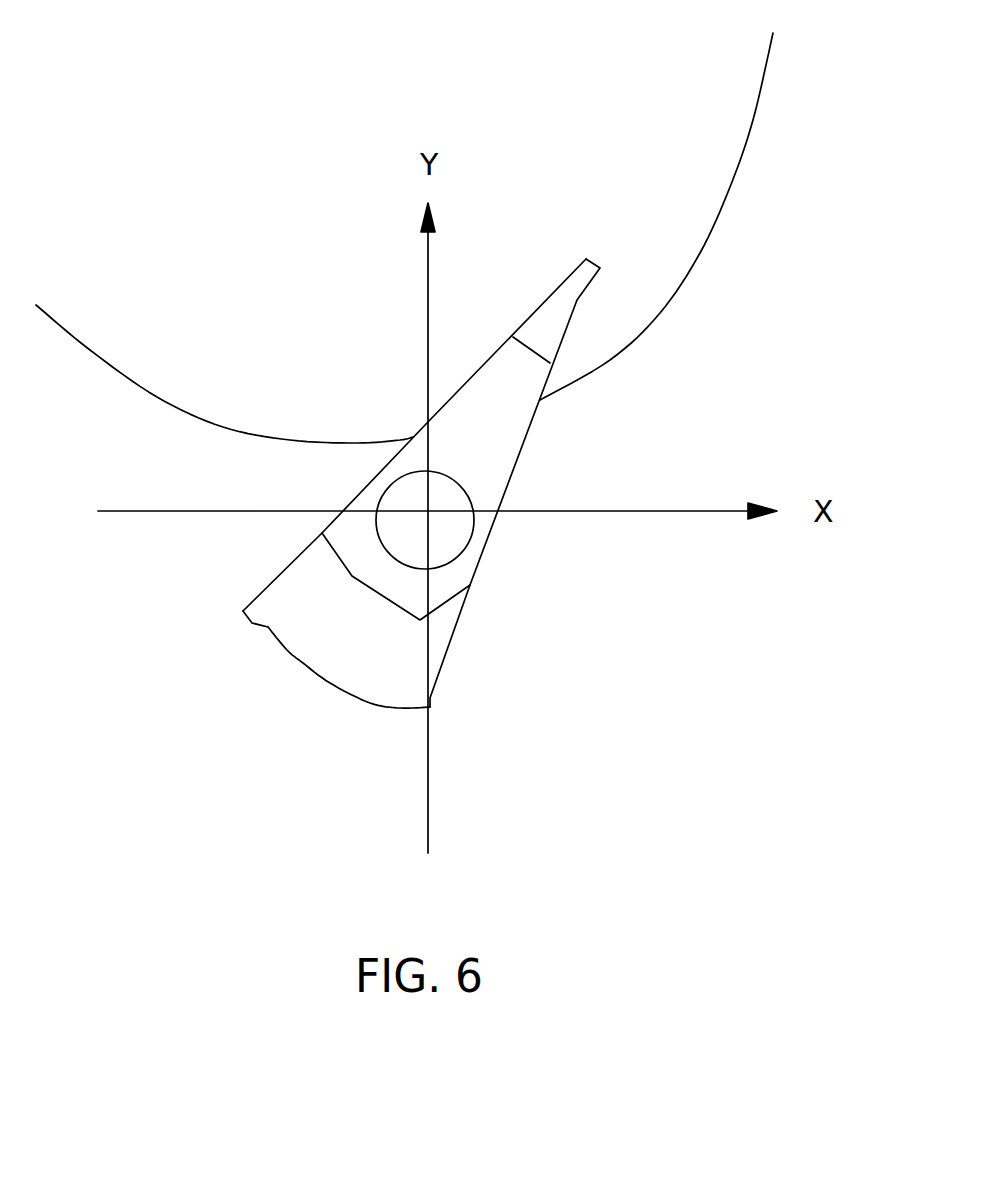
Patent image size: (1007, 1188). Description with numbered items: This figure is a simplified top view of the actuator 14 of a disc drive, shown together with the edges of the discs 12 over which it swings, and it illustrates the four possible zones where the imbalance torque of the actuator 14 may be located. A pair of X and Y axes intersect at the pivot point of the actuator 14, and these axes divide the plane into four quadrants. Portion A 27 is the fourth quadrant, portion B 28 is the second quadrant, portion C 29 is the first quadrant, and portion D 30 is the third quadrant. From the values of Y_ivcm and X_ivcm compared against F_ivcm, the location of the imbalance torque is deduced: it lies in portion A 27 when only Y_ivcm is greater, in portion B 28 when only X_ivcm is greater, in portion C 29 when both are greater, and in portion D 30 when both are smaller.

The discs 12 is at (668, 162).
The actuator 14 is at (505, 418).
The portion A 27 is at (645, 601).
The portion B 28 is at (224, 396).
The portion C 29 is at (642, 457).
The portion D 30 is at (311, 656).